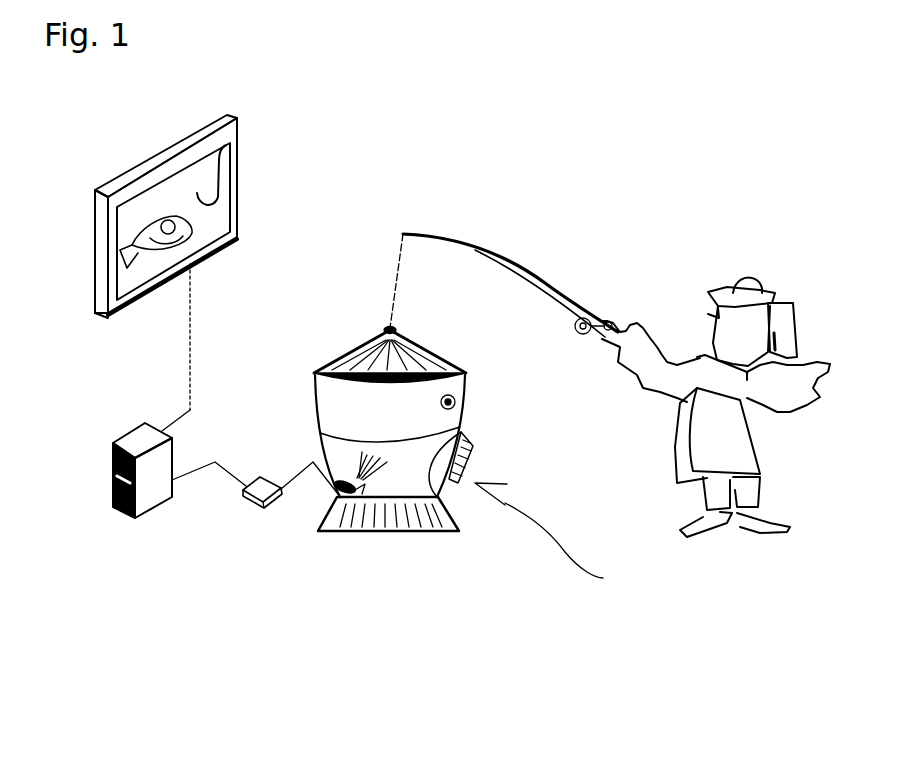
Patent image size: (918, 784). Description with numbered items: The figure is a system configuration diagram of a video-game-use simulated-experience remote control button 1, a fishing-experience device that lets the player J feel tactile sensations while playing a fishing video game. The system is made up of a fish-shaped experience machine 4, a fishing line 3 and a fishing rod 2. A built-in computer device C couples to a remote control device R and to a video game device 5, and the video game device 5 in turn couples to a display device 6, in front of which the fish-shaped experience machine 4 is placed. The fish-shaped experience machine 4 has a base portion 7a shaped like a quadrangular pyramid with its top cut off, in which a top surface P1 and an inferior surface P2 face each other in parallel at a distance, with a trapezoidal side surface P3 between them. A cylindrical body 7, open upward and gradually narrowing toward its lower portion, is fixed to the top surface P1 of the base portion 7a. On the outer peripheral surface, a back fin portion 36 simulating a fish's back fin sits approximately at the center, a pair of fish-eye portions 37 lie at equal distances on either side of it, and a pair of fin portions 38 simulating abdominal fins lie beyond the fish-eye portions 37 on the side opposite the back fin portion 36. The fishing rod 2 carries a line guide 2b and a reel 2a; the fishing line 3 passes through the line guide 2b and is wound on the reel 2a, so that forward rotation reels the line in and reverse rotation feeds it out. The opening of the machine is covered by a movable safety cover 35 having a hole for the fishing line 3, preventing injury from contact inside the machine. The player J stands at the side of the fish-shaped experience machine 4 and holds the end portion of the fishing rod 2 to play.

The video-game-use simulated-experience remote control button 1 is at (277, 600).
The fishing rod 2 is at (555, 308).
The reel 2a is at (584, 338).
The line guide 2b is at (427, 240).
The fishing line 3 is at (392, 283).
The fish-shaped experience machine 4 is at (551, 540).
The video game device 5 is at (153, 495).
The display device 6 is at (237, 118).
The body 7 is at (316, 390).
The base portion 7a is at (460, 533).
The safety cover 35 is at (352, 348).
The back fin portion 36 is at (467, 467).
The fish-eye portions 37 is at (457, 397).
The fin portions 38 is at (353, 456).
The built-in computer device C is at (370, 500).
The player J is at (740, 462).
The top surface P1 is at (470, 440).
The inferior surface P2 is at (403, 533).
The side surface P3 is at (320, 508).
The remote control device R is at (243, 493).